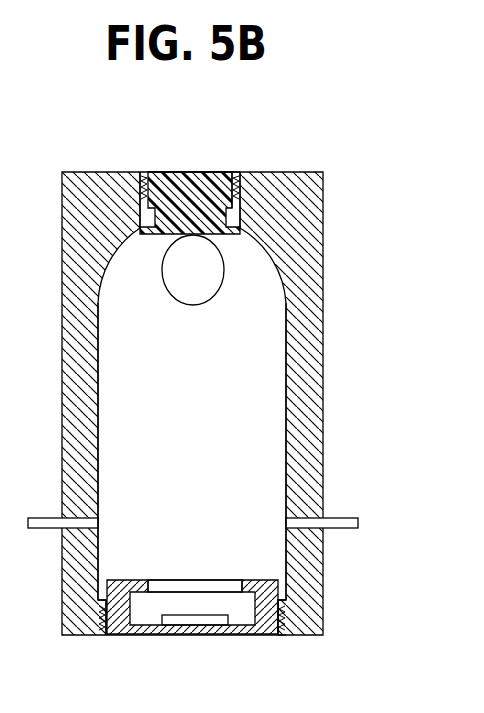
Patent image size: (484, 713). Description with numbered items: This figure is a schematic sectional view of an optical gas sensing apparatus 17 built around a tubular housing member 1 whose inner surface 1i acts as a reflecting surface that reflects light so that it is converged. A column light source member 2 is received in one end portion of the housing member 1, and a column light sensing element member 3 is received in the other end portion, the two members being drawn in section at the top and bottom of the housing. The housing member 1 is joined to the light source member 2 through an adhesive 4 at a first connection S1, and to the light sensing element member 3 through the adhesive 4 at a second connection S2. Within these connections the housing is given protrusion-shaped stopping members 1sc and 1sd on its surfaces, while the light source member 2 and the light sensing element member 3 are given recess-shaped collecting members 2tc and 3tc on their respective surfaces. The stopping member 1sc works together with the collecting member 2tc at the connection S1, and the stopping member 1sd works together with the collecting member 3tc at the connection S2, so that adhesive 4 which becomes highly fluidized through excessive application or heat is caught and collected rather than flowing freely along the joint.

The optical gas sensing apparatus 17 is at (95, 153).
The housing member 1 is at (303, 453).
The inner surface (reflecting surface) 1i is at (285, 362).
The stopping member 1sc is at (253, 202).
The stopping member 1sd is at (280, 602).
The adhesive 4 is at (263, 190).
The light source member 2 is at (170, 183).
The collecting member 2tc is at (213, 190).
The connection S1 is at (244, 165).
The light sensing element member 3 is at (115, 625).
The collecting member 3tc is at (263, 630).
The connection S2 is at (285, 645).